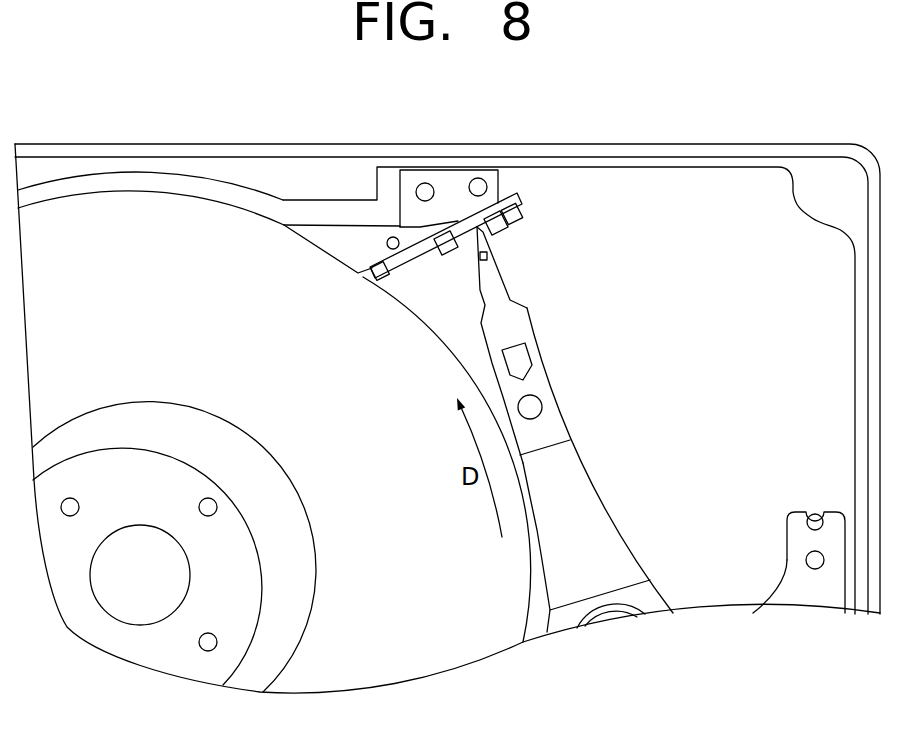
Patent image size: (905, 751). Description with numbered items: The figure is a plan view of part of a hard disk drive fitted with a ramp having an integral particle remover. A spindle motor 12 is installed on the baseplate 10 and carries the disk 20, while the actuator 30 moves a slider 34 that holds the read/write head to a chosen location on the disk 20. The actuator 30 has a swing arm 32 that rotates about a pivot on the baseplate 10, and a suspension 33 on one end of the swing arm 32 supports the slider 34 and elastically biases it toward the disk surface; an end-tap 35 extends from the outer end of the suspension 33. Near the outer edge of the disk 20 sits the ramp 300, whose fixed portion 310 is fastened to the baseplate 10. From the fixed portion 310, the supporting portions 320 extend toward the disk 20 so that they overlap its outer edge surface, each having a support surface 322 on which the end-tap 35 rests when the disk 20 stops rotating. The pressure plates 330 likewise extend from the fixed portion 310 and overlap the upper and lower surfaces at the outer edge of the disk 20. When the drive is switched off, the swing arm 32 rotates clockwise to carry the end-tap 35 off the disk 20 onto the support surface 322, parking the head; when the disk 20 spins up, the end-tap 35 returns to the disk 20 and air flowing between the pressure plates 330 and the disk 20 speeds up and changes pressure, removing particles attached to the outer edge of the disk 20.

The baseplate 10 is at (682, 160).
The spindle motor 12 is at (137, 647).
The disk 20 is at (408, 670).
The actuator 30 is at (670, 546).
The swing arm 32 is at (613, 517).
The suspension 33 is at (502, 298).
The slider 34 is at (488, 258).
The end-tap 35 is at (522, 210).
The ramp 300 is at (387, 205).
The fixed portion 310 is at (462, 212).
The supporting portions 320 is at (380, 275).
The support surface 322 is at (428, 250).
The pressure plates 330 is at (340, 228).